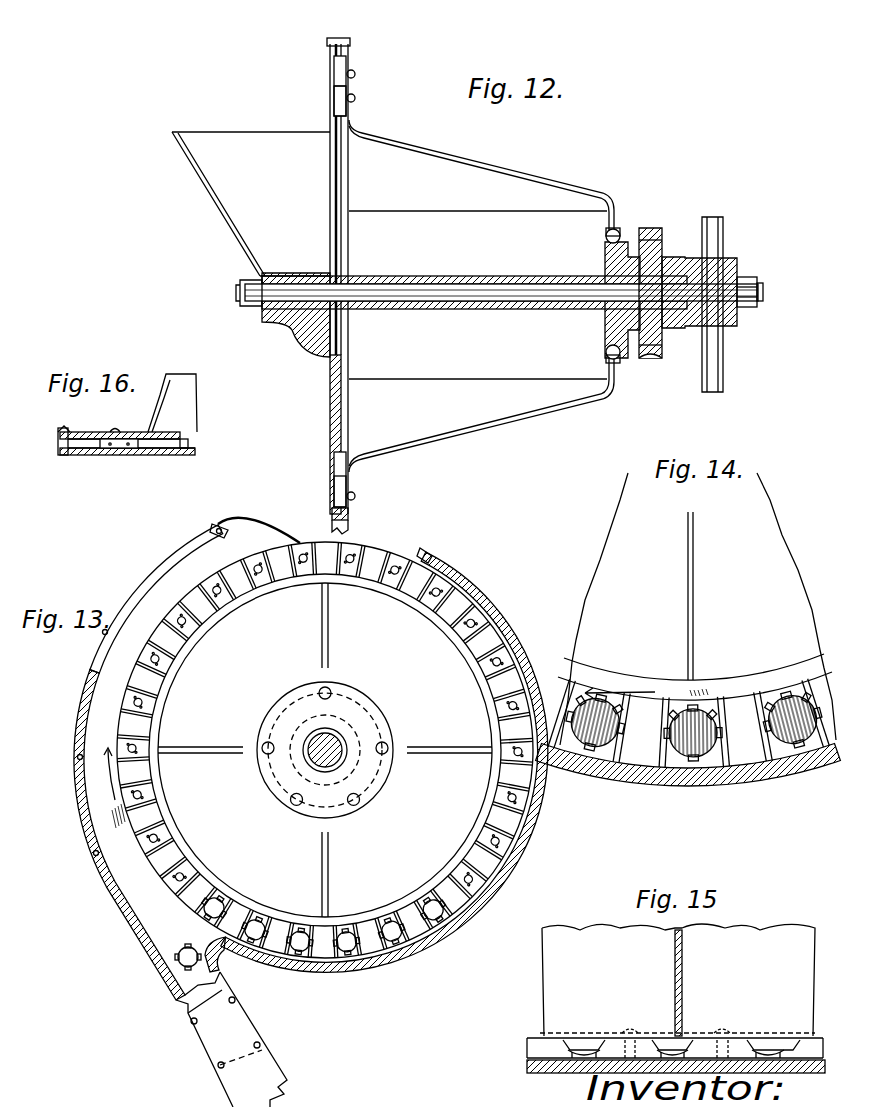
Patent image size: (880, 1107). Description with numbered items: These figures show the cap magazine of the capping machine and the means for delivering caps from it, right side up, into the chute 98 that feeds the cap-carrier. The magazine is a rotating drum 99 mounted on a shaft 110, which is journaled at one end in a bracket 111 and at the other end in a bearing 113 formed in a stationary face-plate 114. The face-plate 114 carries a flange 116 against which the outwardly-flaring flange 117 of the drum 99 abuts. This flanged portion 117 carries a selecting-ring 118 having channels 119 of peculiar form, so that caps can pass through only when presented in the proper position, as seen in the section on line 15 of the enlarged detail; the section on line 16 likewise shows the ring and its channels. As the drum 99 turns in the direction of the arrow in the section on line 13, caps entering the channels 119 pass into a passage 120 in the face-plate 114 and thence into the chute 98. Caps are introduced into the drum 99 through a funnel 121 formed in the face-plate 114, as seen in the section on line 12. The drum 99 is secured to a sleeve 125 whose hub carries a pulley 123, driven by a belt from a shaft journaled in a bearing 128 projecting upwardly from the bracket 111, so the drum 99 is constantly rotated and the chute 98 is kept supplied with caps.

In FIG. 13, the chute 98 is at (231, 1039).
In FIG. 12, the magazine drum 99 is at (480, 166).
In FIG. 16, the magazine drum 99 is at (158, 403).
In FIG. 14, the magazine drum 99 is at (698, 609).
In FIG. 15, the magazine drum 99 is at (678, 980).
In FIG. 12, the shaft 110 is at (525, 288).
In FIG. 12, the bracket 111 is at (738, 258).
In FIG. 12, the bearing 113 is at (303, 335).
In FIG. 12, the face-plate 114 is at (330, 420).
In FIG. 16, the face-plate 114 is at (126, 440).
In FIG. 14, the face-plate 114 is at (612, 690).
In FIG. 15, the face-plate 114 is at (530, 1070).
In FIG. 12, the flange 116 is at (350, 516).
In FIG. 13, the flange 116 is at (478, 598).
In FIG. 14, the flange 116 is at (728, 785).
In FIG. 12, the drum flange 117 is at (353, 92).
In FIG. 16, the drum flange 117 is at (114, 430).
In FIG. 12, the selecting-ring 118 is at (340, 100).
In FIG. 16, the selecting-ring 118 is at (130, 450).
In FIG. 13, the selecting-ring 118 is at (428, 549).
In FIG. 14, the selecting-ring 118 is at (688, 723).
In FIG. 15, the selecting-ring 118 is at (735, 1050).
In FIG. 13, the channels 119 is at (313, 764).
In FIG. 14, the channels 119 is at (620, 712).
In FIG. 15, the channels 119 is at (650, 1048).
In FIG. 13, the passage 120 is at (86, 700).
In FIG. 12, the funnel 121 is at (251, 204).
In FIG. 12, the pulley 123 is at (655, 228).
In FIG. 12, the sleeve 125 is at (478, 277).
In FIG. 12, the bearing 128 is at (722, 236).
In FIG. 13, the section line 12 is at (323, 540).
In FIG. 12, the section line 13 is at (347, 16).
In FIG. 14, the section line 13 is at (598, 774).
In FIG. 14, the section line 15 is at (592, 640).
In FIG. 13, the section line 16 is at (222, 838).